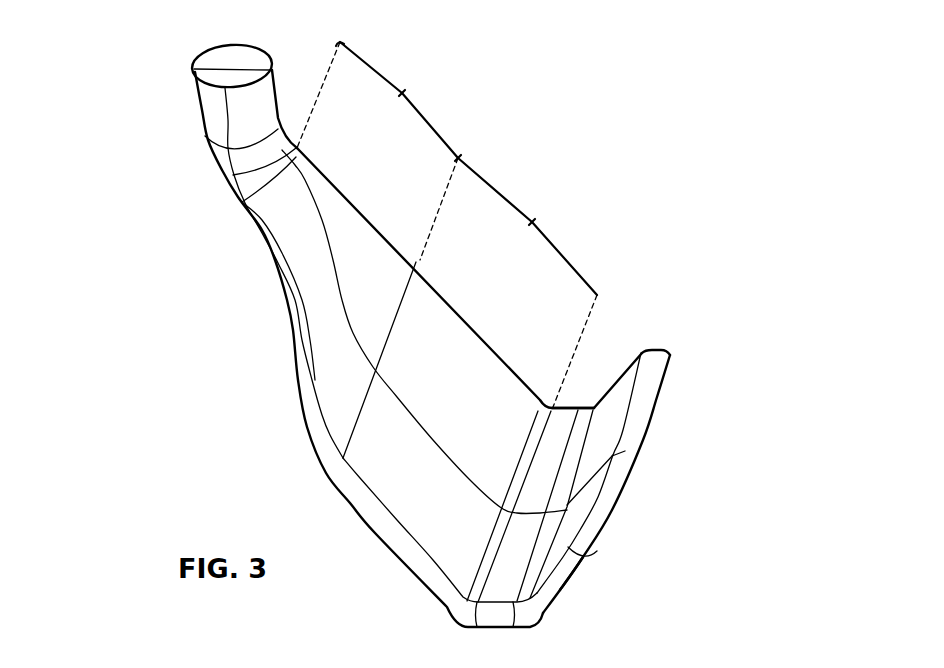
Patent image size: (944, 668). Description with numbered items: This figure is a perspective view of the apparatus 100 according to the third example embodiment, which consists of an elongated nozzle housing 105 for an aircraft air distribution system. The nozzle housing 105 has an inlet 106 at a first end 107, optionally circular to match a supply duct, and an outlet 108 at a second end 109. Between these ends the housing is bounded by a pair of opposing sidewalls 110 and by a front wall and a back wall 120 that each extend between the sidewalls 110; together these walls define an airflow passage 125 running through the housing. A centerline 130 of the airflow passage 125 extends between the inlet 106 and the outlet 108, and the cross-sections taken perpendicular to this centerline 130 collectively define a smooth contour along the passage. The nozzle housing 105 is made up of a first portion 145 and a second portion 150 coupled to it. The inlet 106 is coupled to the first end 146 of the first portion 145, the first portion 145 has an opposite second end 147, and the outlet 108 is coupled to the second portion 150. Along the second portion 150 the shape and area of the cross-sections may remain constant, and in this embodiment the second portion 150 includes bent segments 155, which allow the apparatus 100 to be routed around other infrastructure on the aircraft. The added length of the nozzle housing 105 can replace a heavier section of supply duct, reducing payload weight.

The apparatus 100 is at (168, 57).
The nozzle housing 105 is at (388, 467).
The inlet 106 is at (263, 200).
The first end 107 is at (251, 136).
The outlet 108 is at (670, 353).
The second end 109 is at (656, 352).
The opposing sidewalls 110 is at (440, 297).
The back wall 120 is at (259, 224).
The airflow passage 125 is at (652, 380).
The centerline 130 is at (398, 388).
The first portion 145 is at (403, 92).
The first end of the first portion 146 is at (298, 148).
The second end of the first portion 147 is at (343, 458).
The second portion 150 is at (533, 222).
The bent segment 155 is at (577, 408).